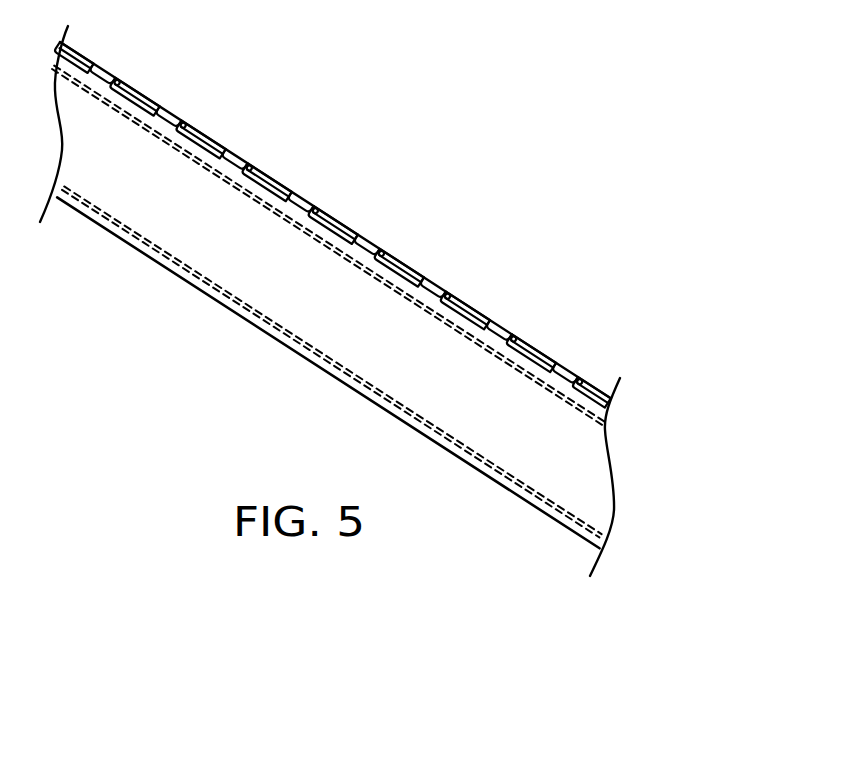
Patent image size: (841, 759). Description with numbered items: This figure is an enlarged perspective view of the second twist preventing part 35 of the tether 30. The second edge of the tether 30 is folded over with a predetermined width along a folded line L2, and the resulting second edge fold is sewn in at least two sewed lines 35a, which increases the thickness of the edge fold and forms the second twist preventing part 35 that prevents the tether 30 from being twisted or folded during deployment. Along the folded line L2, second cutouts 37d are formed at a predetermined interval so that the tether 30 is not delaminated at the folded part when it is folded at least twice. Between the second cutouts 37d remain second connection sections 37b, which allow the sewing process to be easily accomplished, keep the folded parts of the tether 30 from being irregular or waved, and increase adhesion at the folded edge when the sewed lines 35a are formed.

The tether 30 is at (543, 432).
The second twist preventing part 35 is at (428, 236).
The sewed lines 35a is at (282, 212).
The second cutouts 37d is at (355, 233).
The second connection sections 37b is at (443, 285).
The folded line L2 is at (210, 143).